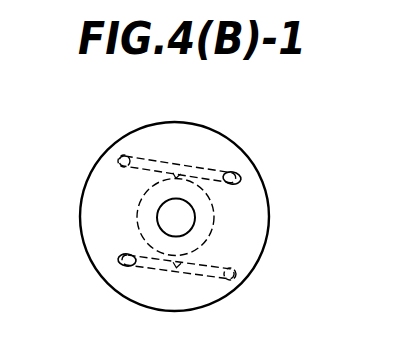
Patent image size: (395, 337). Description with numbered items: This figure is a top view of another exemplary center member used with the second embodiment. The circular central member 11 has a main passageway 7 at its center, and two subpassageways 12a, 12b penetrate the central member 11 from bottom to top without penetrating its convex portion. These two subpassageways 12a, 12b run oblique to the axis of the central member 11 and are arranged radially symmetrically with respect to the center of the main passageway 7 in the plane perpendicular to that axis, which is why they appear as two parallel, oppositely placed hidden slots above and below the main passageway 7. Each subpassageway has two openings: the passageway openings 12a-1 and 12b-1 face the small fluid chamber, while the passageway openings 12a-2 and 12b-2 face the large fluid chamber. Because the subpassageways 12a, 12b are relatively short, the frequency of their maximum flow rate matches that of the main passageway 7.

The central member 11 is at (90, 214).
The main passageway 7 is at (190, 211).
The subpassageway 12a is at (182, 165).
The passageway opening 12a-1 is at (238, 176).
The passageway opening 12a-2 is at (122, 158).
The subpassageway 12b is at (172, 270).
The passageway opening 12b-1 is at (132, 264).
The passageway opening 12b-2 is at (236, 280).